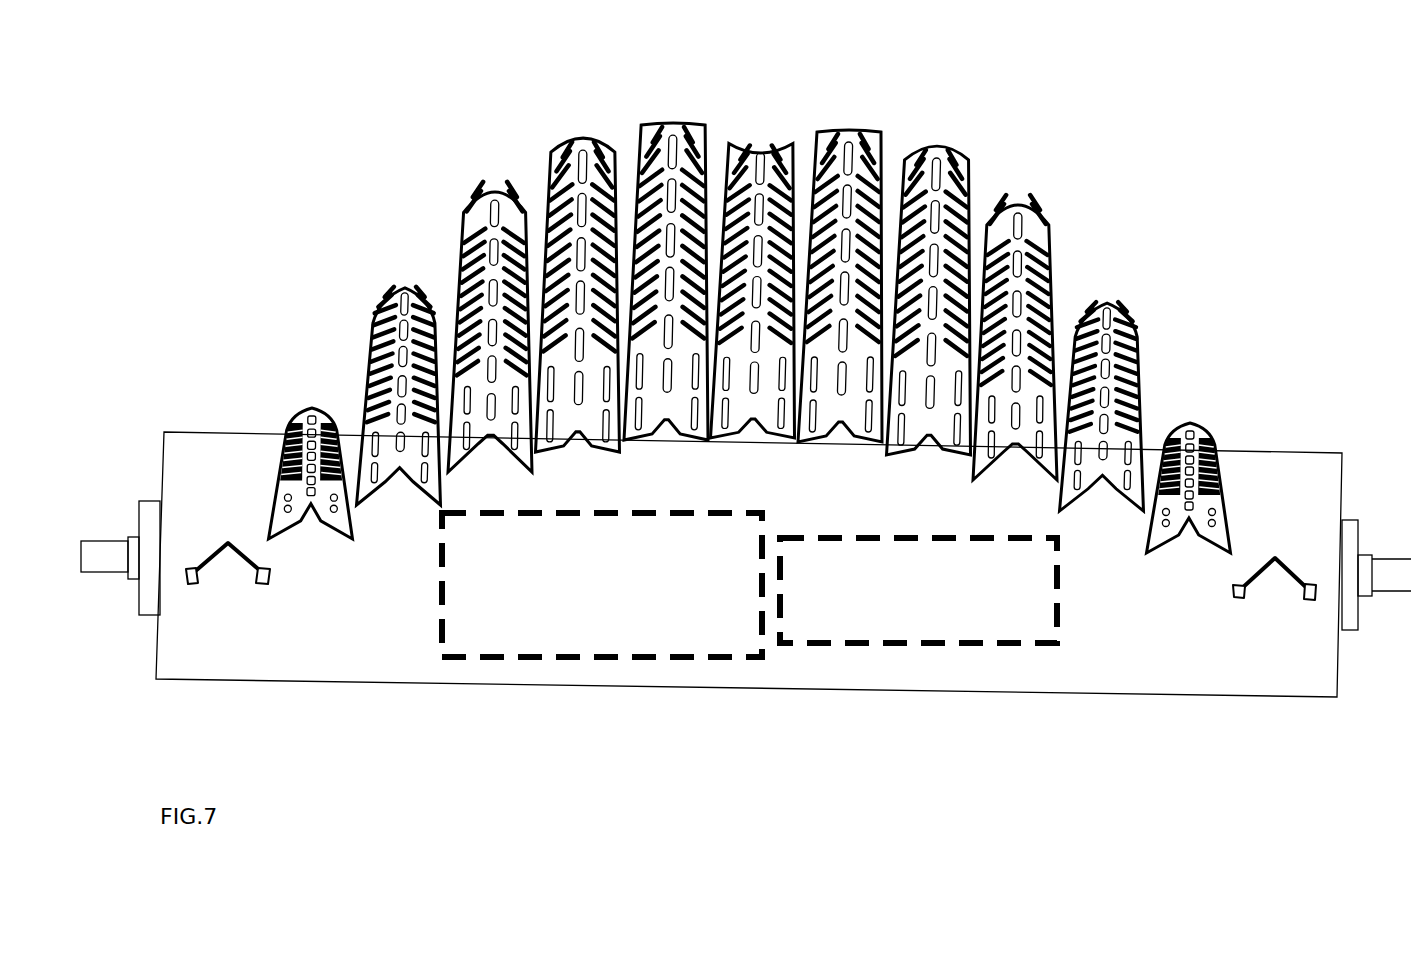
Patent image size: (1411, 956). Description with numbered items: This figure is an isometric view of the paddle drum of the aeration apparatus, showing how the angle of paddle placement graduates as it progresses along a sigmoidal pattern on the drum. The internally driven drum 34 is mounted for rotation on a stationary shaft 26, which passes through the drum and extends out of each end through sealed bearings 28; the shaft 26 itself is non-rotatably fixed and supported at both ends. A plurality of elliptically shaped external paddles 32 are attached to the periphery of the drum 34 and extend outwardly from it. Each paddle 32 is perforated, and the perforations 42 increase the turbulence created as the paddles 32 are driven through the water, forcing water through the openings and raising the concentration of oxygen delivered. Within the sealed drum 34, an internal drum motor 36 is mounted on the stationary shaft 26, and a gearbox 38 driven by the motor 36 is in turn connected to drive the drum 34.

The stationary shaft 26 is at (110, 572).
The sealed bearings 28 is at (1358, 620).
The elliptically shaped external paddles 32 is at (830, 128).
The internally driven drum 34 is at (343, 682).
The internal drum motor 36 is at (912, 645).
The gearbox 38 is at (620, 662).
The perforations 42 is at (497, 214).